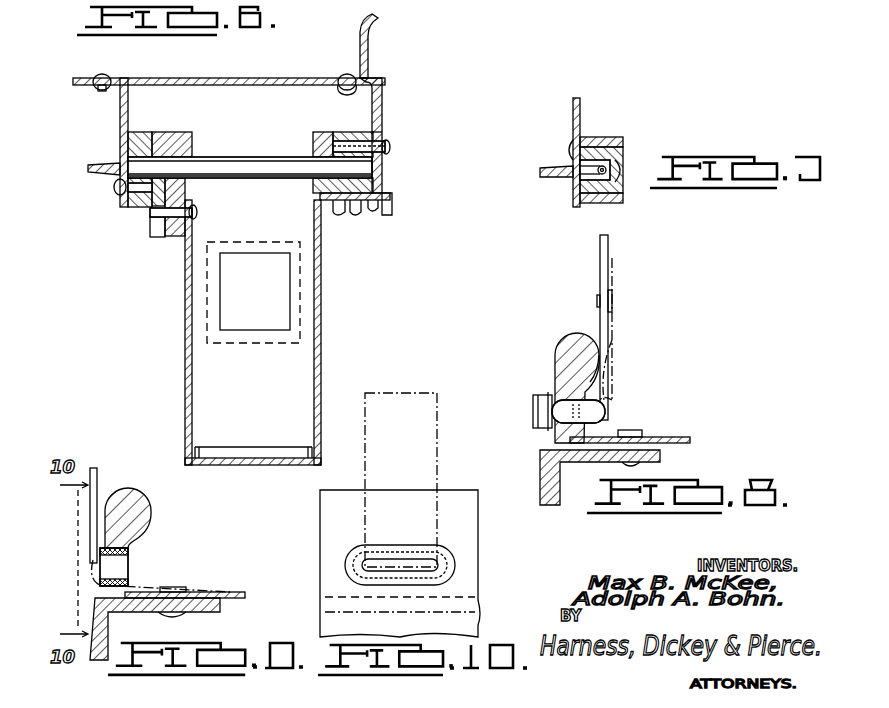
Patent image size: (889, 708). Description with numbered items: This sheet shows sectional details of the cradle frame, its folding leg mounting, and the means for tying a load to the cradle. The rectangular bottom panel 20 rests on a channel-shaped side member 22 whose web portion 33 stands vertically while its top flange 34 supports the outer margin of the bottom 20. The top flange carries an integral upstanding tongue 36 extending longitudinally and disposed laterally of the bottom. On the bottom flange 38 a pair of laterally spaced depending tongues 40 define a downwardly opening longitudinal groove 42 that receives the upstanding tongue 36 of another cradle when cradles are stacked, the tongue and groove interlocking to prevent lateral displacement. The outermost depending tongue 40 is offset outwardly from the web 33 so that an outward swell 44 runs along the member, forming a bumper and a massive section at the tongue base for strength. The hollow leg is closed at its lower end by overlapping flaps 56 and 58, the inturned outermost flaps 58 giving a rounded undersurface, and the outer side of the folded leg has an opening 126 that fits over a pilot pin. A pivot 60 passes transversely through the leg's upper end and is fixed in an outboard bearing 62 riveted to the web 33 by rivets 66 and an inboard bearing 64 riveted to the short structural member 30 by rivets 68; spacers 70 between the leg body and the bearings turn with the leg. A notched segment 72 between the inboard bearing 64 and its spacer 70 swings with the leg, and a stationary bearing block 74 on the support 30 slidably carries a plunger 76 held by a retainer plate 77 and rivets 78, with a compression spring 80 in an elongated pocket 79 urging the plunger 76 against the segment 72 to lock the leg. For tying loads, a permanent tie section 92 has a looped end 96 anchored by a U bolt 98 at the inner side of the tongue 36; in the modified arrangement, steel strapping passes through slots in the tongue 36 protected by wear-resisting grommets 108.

In FIG. 6, the bottom panel or sheet 20 is at (147, 78).
In FIG. 8, the bottom panel or sheet 20 is at (650, 440).
In FIG. 9, the bottom panel or sheet 20 is at (215, 592).
In FIG. 6, the side member 22 is at (388, 112).
In FIG. 8, the side member 22 is at (538, 466).
In FIG. 9, the side member 22 is at (92, 614).
In FIG. 10, the side member 22 is at (465, 620).
In FIG. 6, the structural member 30 is at (116, 124).
In FIG. 7, the structural member 30 is at (566, 118).
In FIG. 6, the web portion 33 is at (384, 135).
In FIG. 6, the top flange 34 is at (340, 74).
In FIG. 6, the upstanding tongue 36 is at (380, 46).
In FIG. 8, the upstanding tongue 36 is at (556, 370).
In FIG. 9, the upstanding tongue 36 is at (150, 514).
In FIG. 10, the upstanding tongue 36 is at (345, 500).
In FIG. 6, the bottom flange 38 is at (352, 212).
In FIG. 6, the depending tongue 40 is at (394, 208).
In FIG. 6, the longitudinal groove 42 is at (374, 210).
In FIG. 6, the outward swell 44 is at (392, 194).
In FIG. 6, the flap 56 is at (256, 452).
In FIG. 6, the flap 58 is at (258, 466).
In FIG. 6, the pivot 60 is at (230, 176).
In FIG. 6, the outboard bearing 62 is at (360, 136).
In FIG. 6, the inboard bearing 64 is at (140, 134).
In FIG. 6, the rivet 66 is at (390, 149).
In FIG. 6, the rivet 68 is at (112, 192).
In FIG. 6, the spacer 70 is at (175, 136).
In FIG. 6, the notched segment 72 is at (148, 212).
In FIG. 7, the stationary bearing block 74 is at (602, 138).
In FIG. 7, the plunger 76 is at (578, 186).
In FIG. 7, the retainer plate 77 is at (617, 183).
In FIG. 7, the rivet 78 is at (596, 204).
In FIG. 7, the elongated pocket 79 is at (574, 152).
In FIG. 7, the compression spring 80 is at (606, 168).
In FIG. 8, the tie section 92 is at (612, 256).
In FIG. 9, the tie section 92 is at (98, 470).
In FIG. 10, the tie section 92 is at (425, 420).
In FIG. 8, the looped end 96 is at (610, 392).
In FIG. 8, the U bolt 98 is at (600, 414).
In FIG. 9, the grommet 108 is at (136, 552).
In FIG. 10, the grommet 108 is at (460, 556).
In FIG. 6, the opening 126 is at (290, 302).